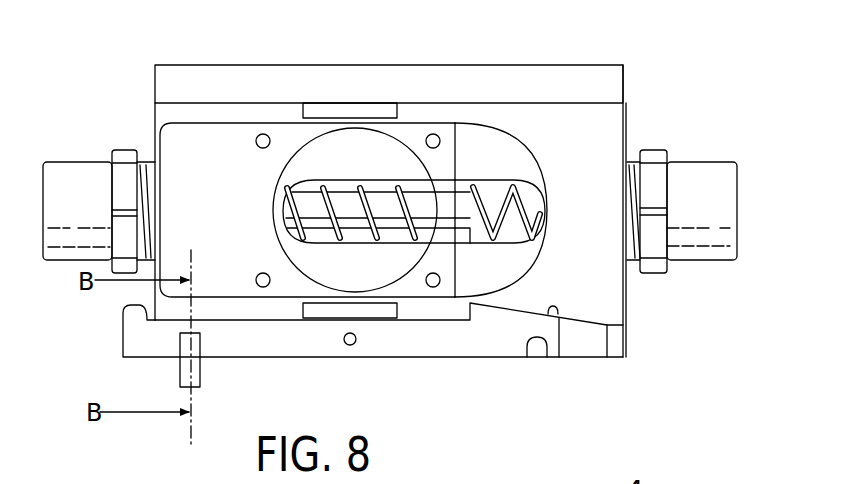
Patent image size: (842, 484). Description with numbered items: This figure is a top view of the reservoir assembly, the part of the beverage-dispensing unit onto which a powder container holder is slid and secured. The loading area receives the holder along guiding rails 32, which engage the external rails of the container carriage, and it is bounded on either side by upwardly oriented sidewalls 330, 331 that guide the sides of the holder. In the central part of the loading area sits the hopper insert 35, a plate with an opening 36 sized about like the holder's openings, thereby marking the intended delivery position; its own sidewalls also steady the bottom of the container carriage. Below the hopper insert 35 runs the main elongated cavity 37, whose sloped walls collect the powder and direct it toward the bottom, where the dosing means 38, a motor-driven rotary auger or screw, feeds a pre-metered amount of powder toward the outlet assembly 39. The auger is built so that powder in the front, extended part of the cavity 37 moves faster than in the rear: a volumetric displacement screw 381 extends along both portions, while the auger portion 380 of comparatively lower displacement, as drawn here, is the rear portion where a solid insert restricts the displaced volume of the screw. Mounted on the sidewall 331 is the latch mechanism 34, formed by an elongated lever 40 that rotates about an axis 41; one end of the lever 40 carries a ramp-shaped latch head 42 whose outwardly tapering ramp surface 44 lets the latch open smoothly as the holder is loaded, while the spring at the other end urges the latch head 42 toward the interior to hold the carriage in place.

The guiding rails 32 is at (350, 110).
The sidewall 330 is at (573, 64).
The sidewall 331 is at (622, 341).
The latch mechanism 34 is at (482, 364).
The hopper insert 35 is at (185, 161).
The opening 36 is at (303, 150).
The main elongated cavity 37 is at (502, 280).
The dosing means 38 is at (531, 207).
The spring 380 is at (495, 185).
The volumetric displacement screw 381 is at (397, 220).
The outlet assembly 39 is at (732, 277).
The elongated lever 40 is at (452, 340).
The axis 41 is at (347, 346).
The latch head 42 is at (593, 344).
The ramp surface 44 is at (561, 357).